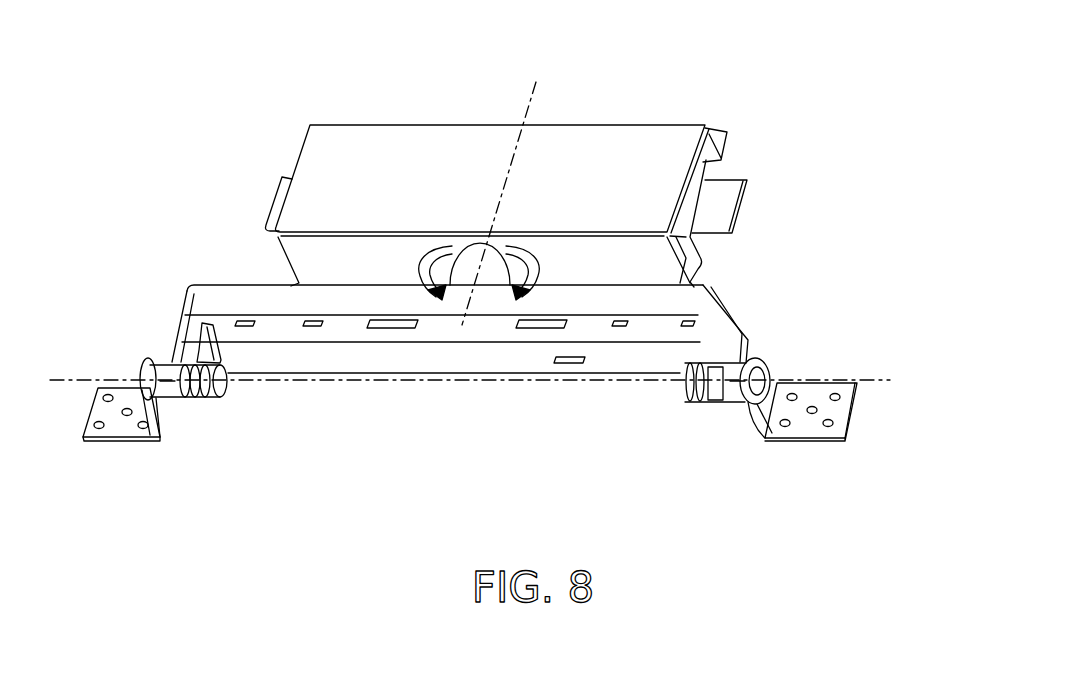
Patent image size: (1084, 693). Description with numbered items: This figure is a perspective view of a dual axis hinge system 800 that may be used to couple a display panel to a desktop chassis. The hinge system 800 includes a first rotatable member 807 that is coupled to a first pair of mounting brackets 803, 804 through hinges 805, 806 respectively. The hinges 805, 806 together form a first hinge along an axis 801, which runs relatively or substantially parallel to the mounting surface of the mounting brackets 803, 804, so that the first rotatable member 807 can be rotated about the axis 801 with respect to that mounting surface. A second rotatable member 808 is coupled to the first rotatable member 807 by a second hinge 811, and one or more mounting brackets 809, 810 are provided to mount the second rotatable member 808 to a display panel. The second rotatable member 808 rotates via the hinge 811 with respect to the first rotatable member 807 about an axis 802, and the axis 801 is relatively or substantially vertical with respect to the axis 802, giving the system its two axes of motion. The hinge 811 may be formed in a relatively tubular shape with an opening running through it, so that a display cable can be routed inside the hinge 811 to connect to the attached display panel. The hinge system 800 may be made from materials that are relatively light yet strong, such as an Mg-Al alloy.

The hinge system 800 is at (713, 28).
The axis 801 is at (925, 374).
The axis 802 is at (578, 99).
The mounting bracket 803 is at (120, 425).
The mounting bracket 804 is at (815, 427).
The hinge 805 is at (198, 404).
The hinge 806 is at (724, 403).
The first rotatable member 807 is at (442, 358).
The second rotatable member 808 is at (378, 148).
The mounting bracket 809 is at (268, 203).
The mounting bracket 810 is at (725, 201).
The second hinge 811 is at (485, 268).